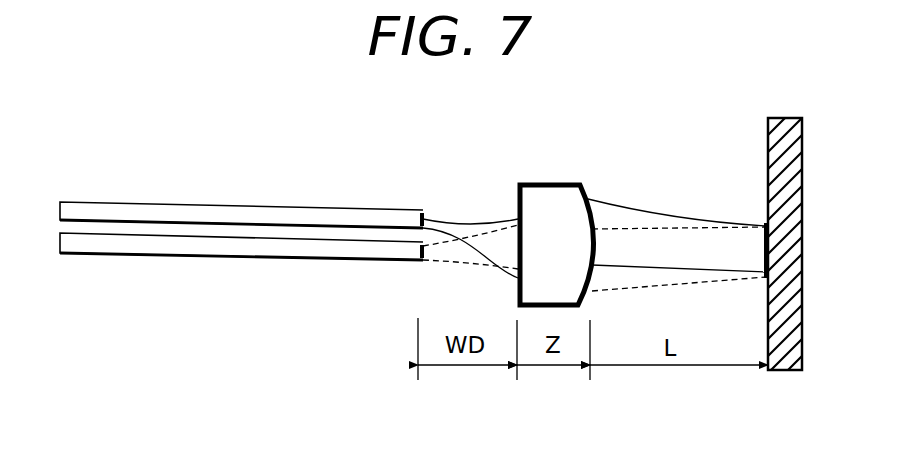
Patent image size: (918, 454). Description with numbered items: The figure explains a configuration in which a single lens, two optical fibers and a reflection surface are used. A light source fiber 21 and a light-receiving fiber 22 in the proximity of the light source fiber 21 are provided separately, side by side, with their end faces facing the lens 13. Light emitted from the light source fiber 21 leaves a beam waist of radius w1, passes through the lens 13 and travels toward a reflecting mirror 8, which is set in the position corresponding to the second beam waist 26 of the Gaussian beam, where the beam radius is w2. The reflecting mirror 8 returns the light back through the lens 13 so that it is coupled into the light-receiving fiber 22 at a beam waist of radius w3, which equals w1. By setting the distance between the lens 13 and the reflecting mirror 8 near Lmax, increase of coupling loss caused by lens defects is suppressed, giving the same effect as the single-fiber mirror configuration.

The light source fiber 21 is at (258, 218).
The light-receiving fiber 22 is at (230, 260).
The lens 13 is at (548, 207).
The second beam waist 26 is at (738, 176).
The reflecting mirror 8 is at (775, 160).
The radius of first beam waist w1 is at (454, 230).
The radius of third beam waist w3 is at (454, 259).
The radius of second beam waist w2 is at (747, 235).